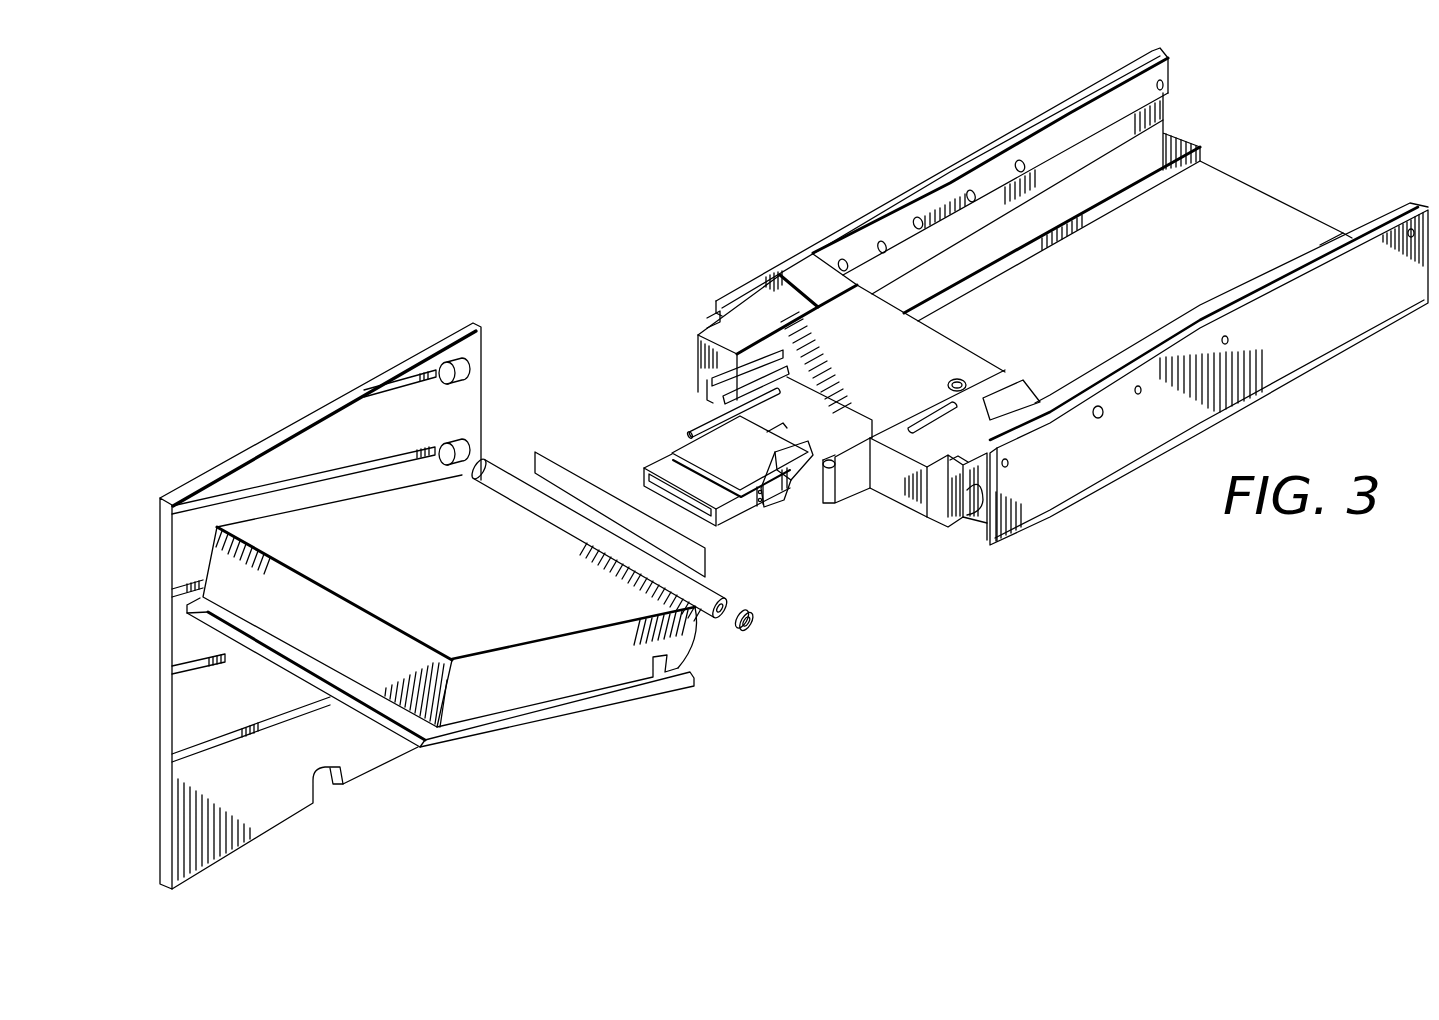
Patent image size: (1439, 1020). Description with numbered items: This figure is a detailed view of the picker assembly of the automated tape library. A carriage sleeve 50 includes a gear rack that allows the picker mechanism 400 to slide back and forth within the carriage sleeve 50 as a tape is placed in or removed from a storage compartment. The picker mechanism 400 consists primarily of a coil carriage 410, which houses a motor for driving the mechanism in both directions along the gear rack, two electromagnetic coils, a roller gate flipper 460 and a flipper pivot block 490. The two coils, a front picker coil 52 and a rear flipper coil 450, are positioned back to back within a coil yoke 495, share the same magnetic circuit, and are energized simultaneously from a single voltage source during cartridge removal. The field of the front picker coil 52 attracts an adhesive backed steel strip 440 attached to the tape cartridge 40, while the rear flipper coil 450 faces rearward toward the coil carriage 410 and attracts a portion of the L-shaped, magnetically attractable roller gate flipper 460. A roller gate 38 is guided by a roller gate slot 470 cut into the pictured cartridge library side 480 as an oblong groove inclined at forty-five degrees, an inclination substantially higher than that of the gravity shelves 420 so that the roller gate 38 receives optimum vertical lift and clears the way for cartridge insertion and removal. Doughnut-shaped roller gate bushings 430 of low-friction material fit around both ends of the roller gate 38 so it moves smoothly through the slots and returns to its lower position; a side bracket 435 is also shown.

The roller gate 38 is at (713, 595).
The tape cartridge 40 is at (260, 521).
The carriage sleeve 50 is at (1166, 84).
The front picker coil 52 is at (722, 517).
The picker mechanism 400 is at (878, 505).
The coil carriage 410 is at (960, 349).
The gravity shelves 420 is at (473, 733).
The roller gate bushings 430 is at (753, 629).
The side bracket 435 is at (160, 504).
The adhesive backed steel strip 440 is at (534, 464).
The rear flipper coil 450 is at (790, 486).
The roller gate flipper 460 is at (718, 432).
The roller gate slot 470 is at (450, 364).
The cartridge library side 480 is at (281, 437).
The flipper pivot block 490 is at (691, 430).
The coil yoke 495 is at (672, 455).